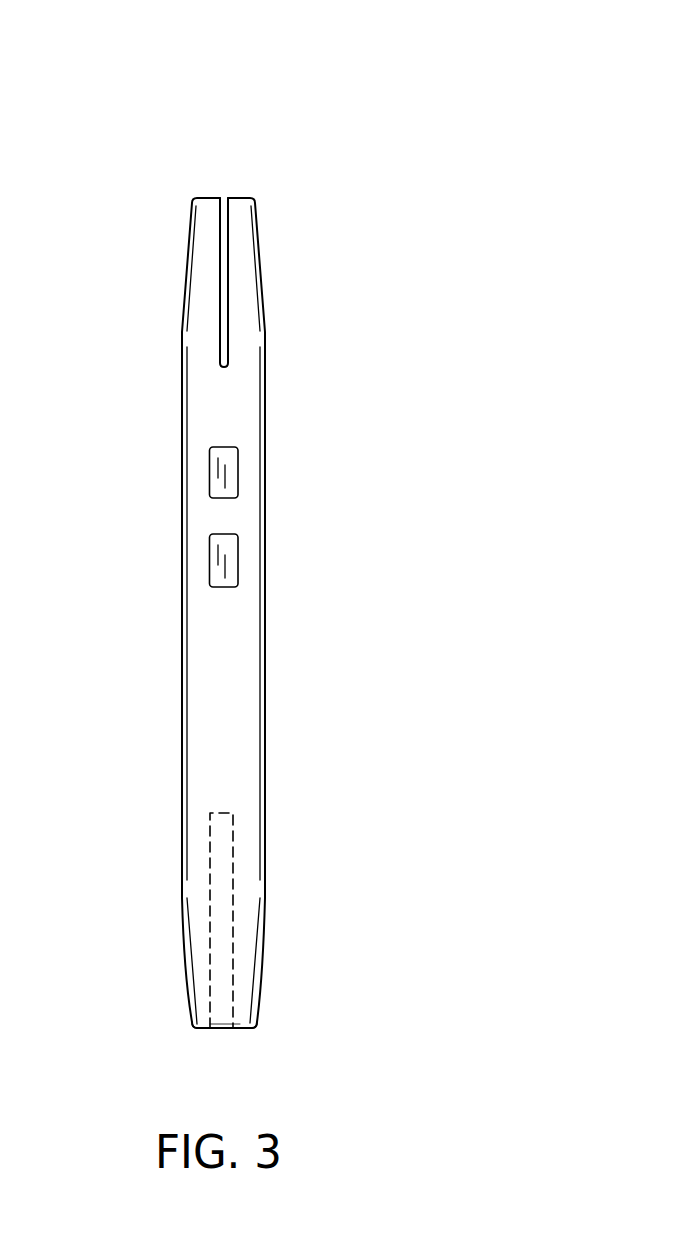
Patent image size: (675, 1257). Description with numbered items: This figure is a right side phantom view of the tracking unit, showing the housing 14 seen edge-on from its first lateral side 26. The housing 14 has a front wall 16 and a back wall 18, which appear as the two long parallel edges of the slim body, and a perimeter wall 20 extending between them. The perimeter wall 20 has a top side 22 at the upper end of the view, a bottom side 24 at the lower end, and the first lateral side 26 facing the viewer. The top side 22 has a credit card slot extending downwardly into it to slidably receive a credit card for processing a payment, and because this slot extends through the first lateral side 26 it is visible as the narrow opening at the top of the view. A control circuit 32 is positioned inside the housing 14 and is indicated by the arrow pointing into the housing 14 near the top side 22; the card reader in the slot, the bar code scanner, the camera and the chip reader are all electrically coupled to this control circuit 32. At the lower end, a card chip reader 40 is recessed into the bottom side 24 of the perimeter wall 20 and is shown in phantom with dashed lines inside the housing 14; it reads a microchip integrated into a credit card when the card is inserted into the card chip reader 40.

The housing 14 is at (193, 198).
The top side 22 is at (255, 197).
The control circuit 32 is at (224, 160).
The front wall 16 is at (182, 428).
The back wall 18 is at (262, 418).
The perimeter wall 20 is at (213, 637).
The first lateral side 26 is at (233, 680).
The card chip reader 40 is at (210, 933).
The bottom side 24 is at (245, 1030).